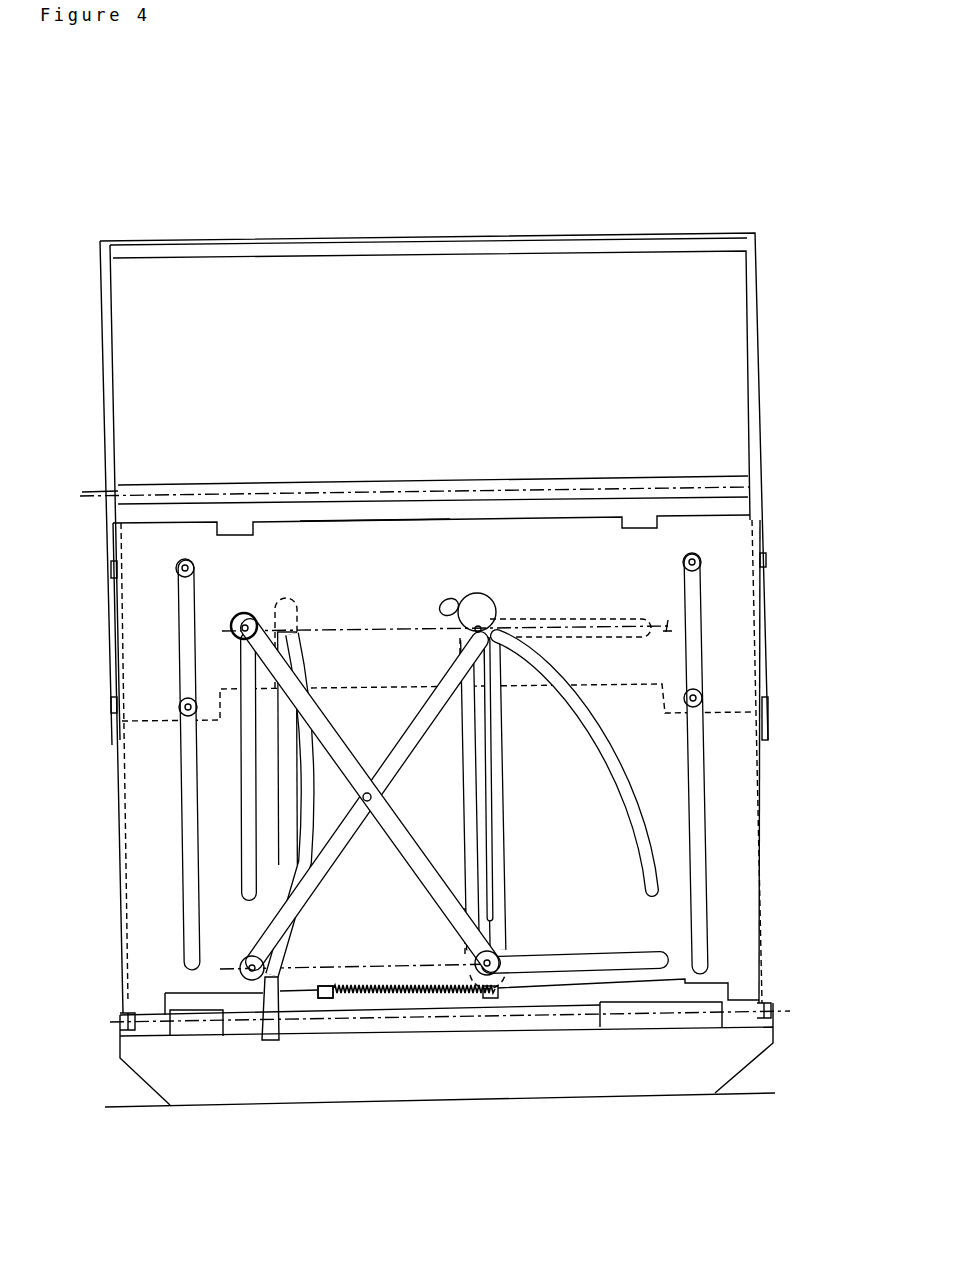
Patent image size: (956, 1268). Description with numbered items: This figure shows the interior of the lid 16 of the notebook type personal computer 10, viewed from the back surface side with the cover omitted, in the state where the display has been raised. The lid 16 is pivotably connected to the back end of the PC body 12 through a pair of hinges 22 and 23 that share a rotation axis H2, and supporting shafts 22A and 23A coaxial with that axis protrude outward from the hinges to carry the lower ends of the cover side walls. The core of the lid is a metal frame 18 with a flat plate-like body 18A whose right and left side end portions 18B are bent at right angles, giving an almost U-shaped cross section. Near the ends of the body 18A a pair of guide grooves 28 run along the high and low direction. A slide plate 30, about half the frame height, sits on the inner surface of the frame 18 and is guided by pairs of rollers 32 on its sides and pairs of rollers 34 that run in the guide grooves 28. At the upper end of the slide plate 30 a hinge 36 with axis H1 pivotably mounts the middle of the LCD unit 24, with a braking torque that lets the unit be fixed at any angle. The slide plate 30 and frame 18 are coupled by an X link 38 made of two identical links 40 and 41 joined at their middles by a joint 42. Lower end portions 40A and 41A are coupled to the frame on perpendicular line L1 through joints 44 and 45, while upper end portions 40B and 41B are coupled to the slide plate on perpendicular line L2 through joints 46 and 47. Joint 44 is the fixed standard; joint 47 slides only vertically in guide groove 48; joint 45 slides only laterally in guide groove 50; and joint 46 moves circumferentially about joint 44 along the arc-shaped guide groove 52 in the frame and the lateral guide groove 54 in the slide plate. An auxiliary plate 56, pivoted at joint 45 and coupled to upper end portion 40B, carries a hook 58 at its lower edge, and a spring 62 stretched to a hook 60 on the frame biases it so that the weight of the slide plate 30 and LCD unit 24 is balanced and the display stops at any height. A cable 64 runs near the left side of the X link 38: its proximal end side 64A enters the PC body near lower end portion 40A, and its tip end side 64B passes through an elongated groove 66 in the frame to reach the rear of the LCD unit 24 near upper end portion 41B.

The notebook type personal computer 10 is at (358, 163).
The PC body 12 is at (215, 1100).
The lid 16 is at (82, 530).
The frame 18 is at (285, 520).
The body 18A is at (380, 538).
The side end portions 18B is at (120, 875).
The hinge 22 is at (715, 1030).
The supporting shaft 22A is at (770, 1035).
The hinge 23 is at (185, 1030).
The supporting shaft 23A is at (132, 1035).
The LCD unit 24 is at (322, 248).
The guide grooves 28 is at (183, 928).
The slide plate 30 is at (510, 500).
The rollers 32 is at (112, 575).
The rollers 34 is at (178, 566).
The hinge 36 is at (427, 484).
The X link 38 is at (372, 718).
The link 40 is at (440, 680).
The lower end portion 40A is at (242, 965).
The upper end portion 40B is at (495, 636).
The link 41 is at (314, 705).
The lower end portion 41A is at (497, 963).
The upper end portion 41B is at (240, 650).
The joint 42 is at (372, 797).
The joint 44 is at (250, 955).
The joint 45 is at (490, 950).
The joint 46 is at (482, 612).
The joint 47 is at (242, 615).
The guide groove 48 is at (245, 836).
The guide groove 50 is at (597, 958).
The guide groove 52 is at (605, 748).
The guide groove 54 is at (615, 628).
The auxiliary plate 56 is at (502, 798).
The hook 58 is at (487, 835).
The hook 60 is at (325, 999).
The spring 62 is at (405, 996).
The cable 64 is at (305, 835).
The cable proximal end side 64A is at (270, 1037).
The cable tip end side 64B is at (293, 635).
The elongated groove 66 is at (282, 801).
The axis H1 is at (760, 488).
The rotation axis H2 is at (775, 1012).
The perpendicular line L1 is at (665, 961).
The perpendicular line L2 is at (665, 627).